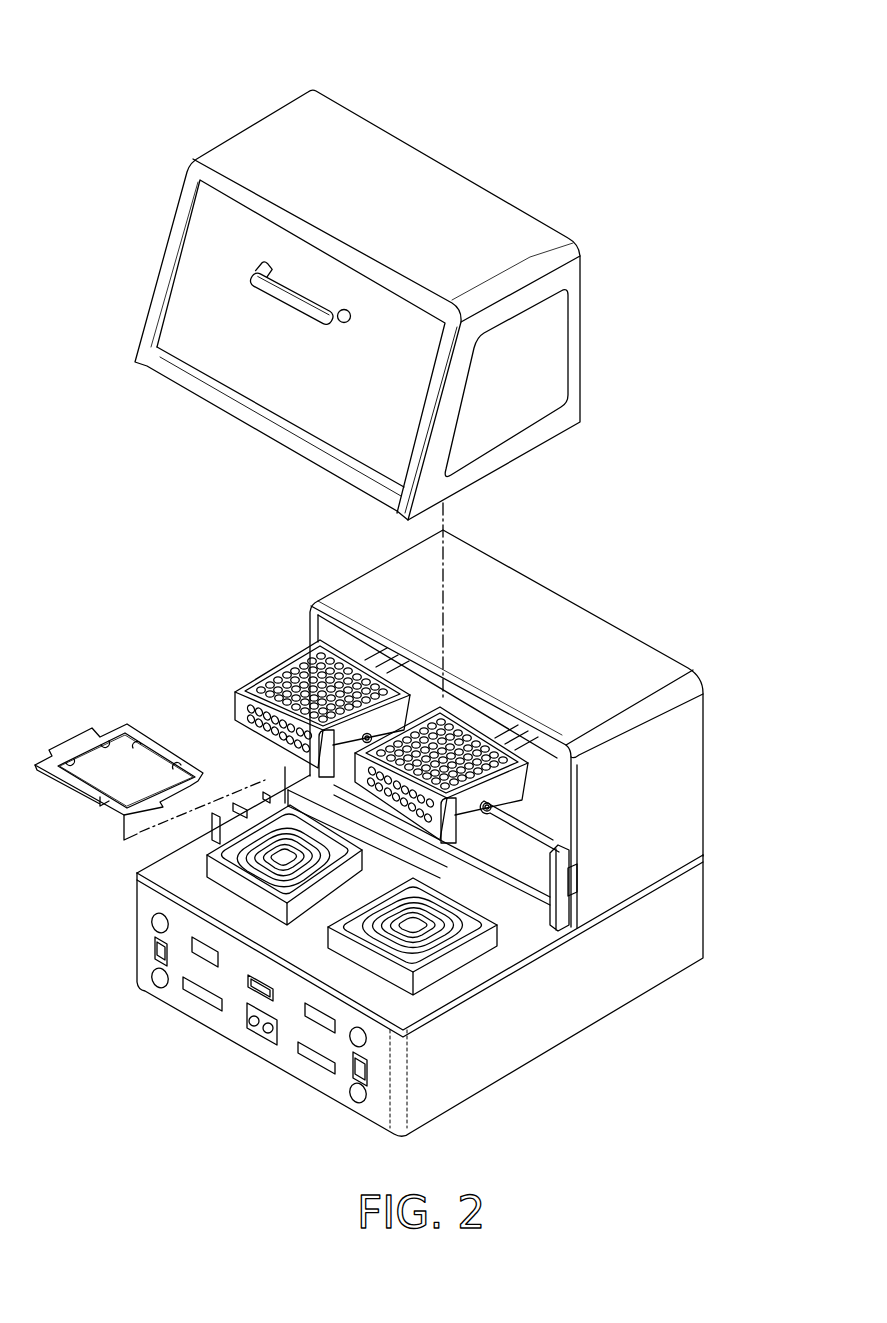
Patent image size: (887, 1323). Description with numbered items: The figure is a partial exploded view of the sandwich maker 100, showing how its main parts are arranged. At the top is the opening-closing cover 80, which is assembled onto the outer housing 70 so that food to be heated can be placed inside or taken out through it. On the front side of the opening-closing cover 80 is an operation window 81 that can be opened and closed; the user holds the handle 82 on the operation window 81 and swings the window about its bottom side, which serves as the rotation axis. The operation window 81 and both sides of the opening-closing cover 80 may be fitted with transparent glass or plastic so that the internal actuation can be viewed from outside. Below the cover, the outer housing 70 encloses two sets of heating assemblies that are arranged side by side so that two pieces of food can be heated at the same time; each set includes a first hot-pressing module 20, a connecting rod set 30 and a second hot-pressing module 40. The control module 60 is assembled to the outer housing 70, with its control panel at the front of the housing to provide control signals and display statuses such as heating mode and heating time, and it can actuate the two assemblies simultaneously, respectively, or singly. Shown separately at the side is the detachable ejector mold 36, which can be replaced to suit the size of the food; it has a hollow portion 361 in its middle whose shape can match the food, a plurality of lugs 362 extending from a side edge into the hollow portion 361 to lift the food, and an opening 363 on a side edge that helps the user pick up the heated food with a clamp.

The sandwich maker 100 is at (97, 73).
The opening-closing cover 80 is at (266, 126).
The operation window 81 is at (183, 305).
The handle 82 is at (253, 278).
The outer housing 70 is at (607, 637).
The control module 60 is at (338, 1098).
The second hot-pressing module 40 is at (527, 790).
The connecting rod set 30 is at (540, 837).
The first hot-pressing module 20 is at (440, 965).
The ejector mold 36 is at (40, 758).
The hollow portion 361 is at (170, 756).
The lugs 362 is at (108, 732).
The opening 363 is at (74, 797).